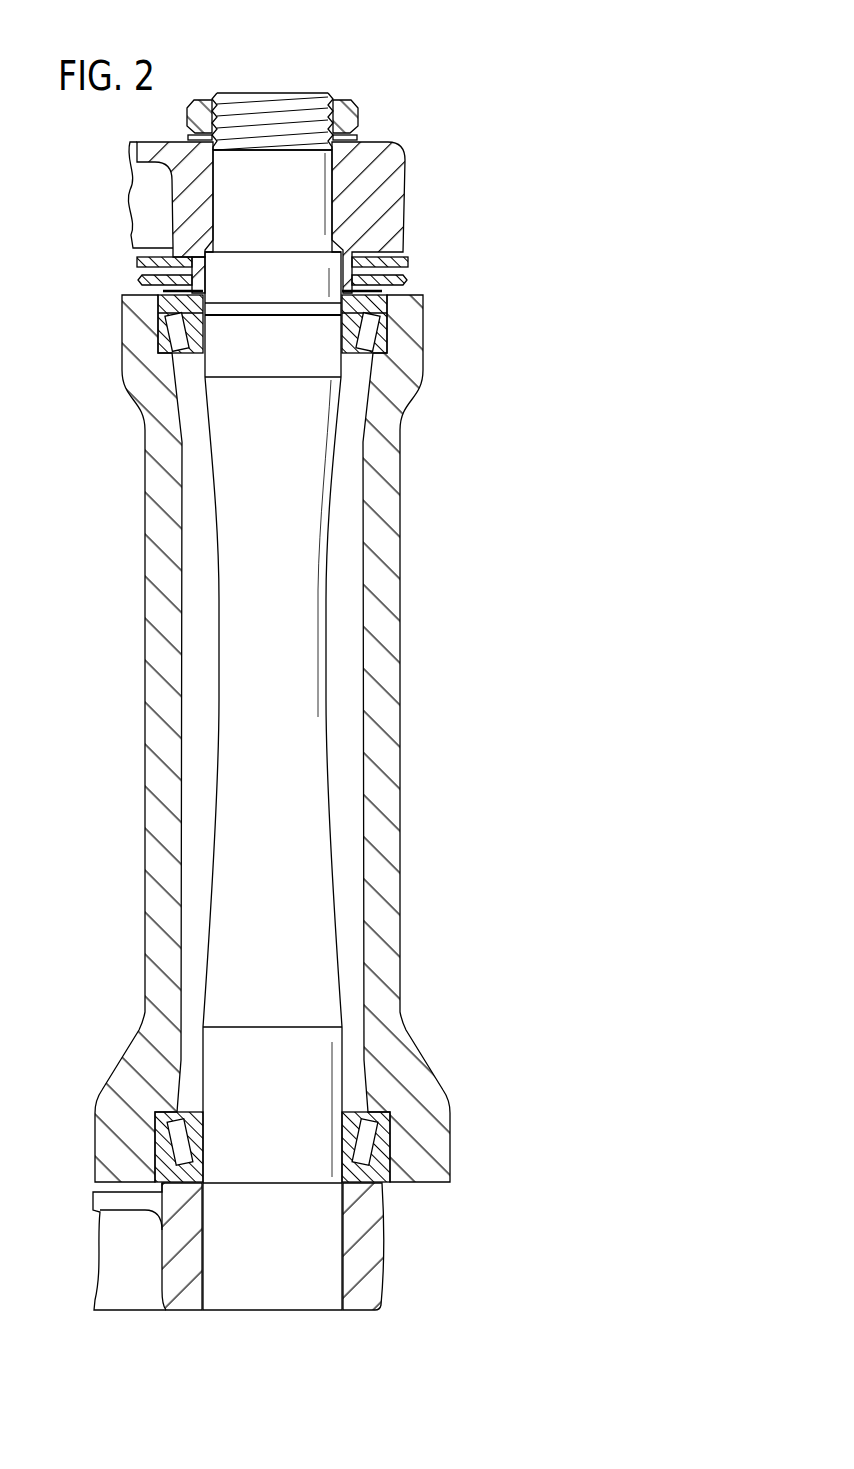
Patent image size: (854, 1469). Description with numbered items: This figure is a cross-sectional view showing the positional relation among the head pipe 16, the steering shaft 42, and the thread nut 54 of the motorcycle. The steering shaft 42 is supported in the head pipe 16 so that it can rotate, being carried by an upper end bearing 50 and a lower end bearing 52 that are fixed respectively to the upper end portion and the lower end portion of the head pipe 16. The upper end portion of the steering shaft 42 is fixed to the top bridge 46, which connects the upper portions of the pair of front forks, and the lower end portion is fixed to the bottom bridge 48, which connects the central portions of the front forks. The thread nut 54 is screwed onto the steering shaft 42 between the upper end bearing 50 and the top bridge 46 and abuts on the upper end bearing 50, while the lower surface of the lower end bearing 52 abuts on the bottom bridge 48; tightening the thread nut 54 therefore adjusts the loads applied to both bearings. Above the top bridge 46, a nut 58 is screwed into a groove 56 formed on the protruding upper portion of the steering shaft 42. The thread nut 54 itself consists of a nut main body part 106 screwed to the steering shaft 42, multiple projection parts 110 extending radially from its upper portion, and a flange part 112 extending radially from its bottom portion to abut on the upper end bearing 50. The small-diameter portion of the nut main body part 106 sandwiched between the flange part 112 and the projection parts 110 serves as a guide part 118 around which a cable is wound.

The head pipe 16 is at (400, 505).
The steering shaft 42 is at (293, 597).
The top bridge 46 is at (390, 176).
The bottom bridge 48 is at (373, 1245).
The upper end bearing 50 is at (377, 340).
The lower end bearing 52 is at (382, 1127).
The thread nut 54 is at (434, 266).
The groove 56 is at (302, 108).
The nut 58 is at (358, 116).
The nut main body part 106 is at (188, 248).
The projection parts 110 is at (137, 262).
The flange part 112 is at (140, 277).
The guide part 118 is at (352, 268).